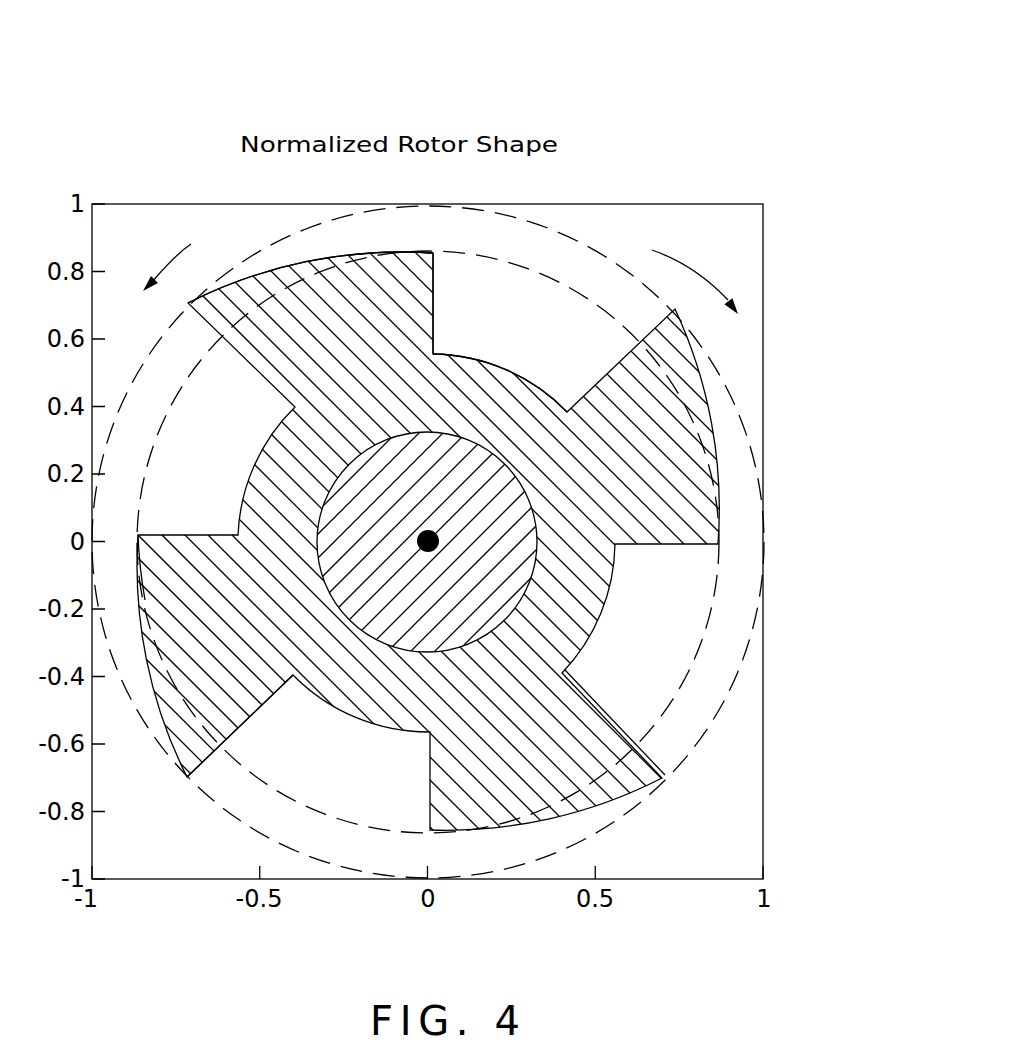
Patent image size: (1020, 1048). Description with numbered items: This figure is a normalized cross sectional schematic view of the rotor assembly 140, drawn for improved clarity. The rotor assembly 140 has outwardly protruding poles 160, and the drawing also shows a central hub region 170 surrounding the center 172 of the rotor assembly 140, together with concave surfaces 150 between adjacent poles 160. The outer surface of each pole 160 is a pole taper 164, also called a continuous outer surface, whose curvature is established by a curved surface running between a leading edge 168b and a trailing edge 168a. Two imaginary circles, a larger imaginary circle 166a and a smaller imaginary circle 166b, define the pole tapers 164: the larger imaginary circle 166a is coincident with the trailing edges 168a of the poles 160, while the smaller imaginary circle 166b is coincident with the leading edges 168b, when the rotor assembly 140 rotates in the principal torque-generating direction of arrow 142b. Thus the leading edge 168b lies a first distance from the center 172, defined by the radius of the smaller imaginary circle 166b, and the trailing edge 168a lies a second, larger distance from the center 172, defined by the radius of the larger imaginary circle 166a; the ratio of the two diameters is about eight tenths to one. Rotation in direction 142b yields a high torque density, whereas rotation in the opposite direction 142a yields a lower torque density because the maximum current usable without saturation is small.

The rotor assembly 140 is at (152, 158).
The opposite direction 142a is at (194, 253).
The principal torque-producing rotational direction 142b is at (683, 267).
The concave inter-lobe surface 150 is at (531, 380).
The outwardly protruding pole 160 is at (434, 323).
The pole taper 164 is at (310, 257).
The larger imaginary circle 166a is at (688, 662).
The smaller imaginary circle 166b is at (740, 672).
The trailing edge 168a is at (187, 778).
The leading edge 168b is at (437, 250).
The central hub 170 is at (538, 563).
The center 172 is at (421, 552).